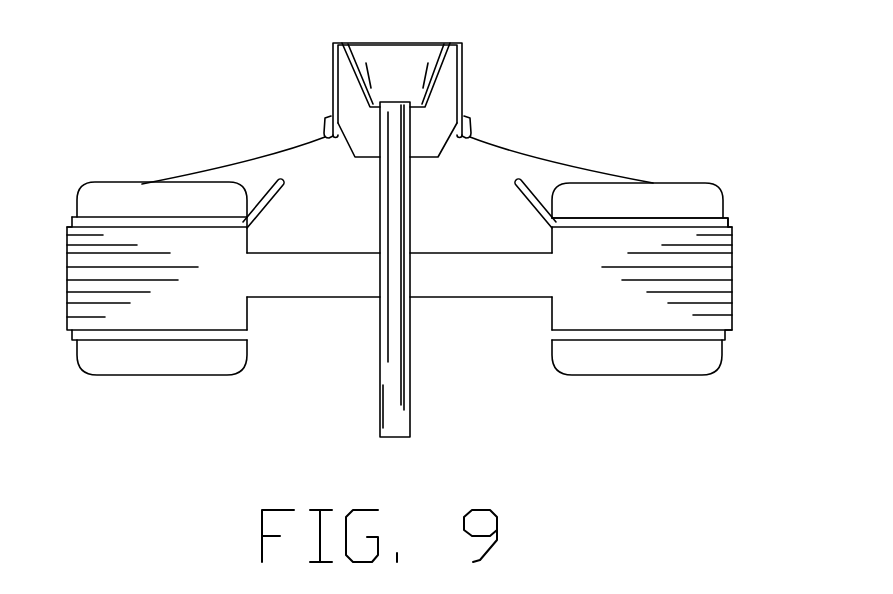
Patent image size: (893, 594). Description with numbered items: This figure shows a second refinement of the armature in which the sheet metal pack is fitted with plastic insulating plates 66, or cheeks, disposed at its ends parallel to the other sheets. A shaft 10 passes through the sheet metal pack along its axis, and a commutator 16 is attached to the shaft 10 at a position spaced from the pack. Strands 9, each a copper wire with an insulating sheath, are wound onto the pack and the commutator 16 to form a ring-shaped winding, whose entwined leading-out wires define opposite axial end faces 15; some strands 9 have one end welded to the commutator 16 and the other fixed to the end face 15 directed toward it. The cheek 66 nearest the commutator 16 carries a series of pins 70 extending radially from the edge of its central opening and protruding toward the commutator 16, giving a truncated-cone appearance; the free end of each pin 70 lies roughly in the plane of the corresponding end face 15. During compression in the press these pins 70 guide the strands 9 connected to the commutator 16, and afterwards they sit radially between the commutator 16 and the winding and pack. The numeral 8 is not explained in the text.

The container 8 is at (695, 202).
The strand 9 is at (258, 160).
The shaft 10 is at (397, 373).
The axial end face 15 is at (141, 184).
The commutator 16 is at (446, 83).
The insulating plate 66 is at (590, 217).
The pin 70 is at (282, 192).